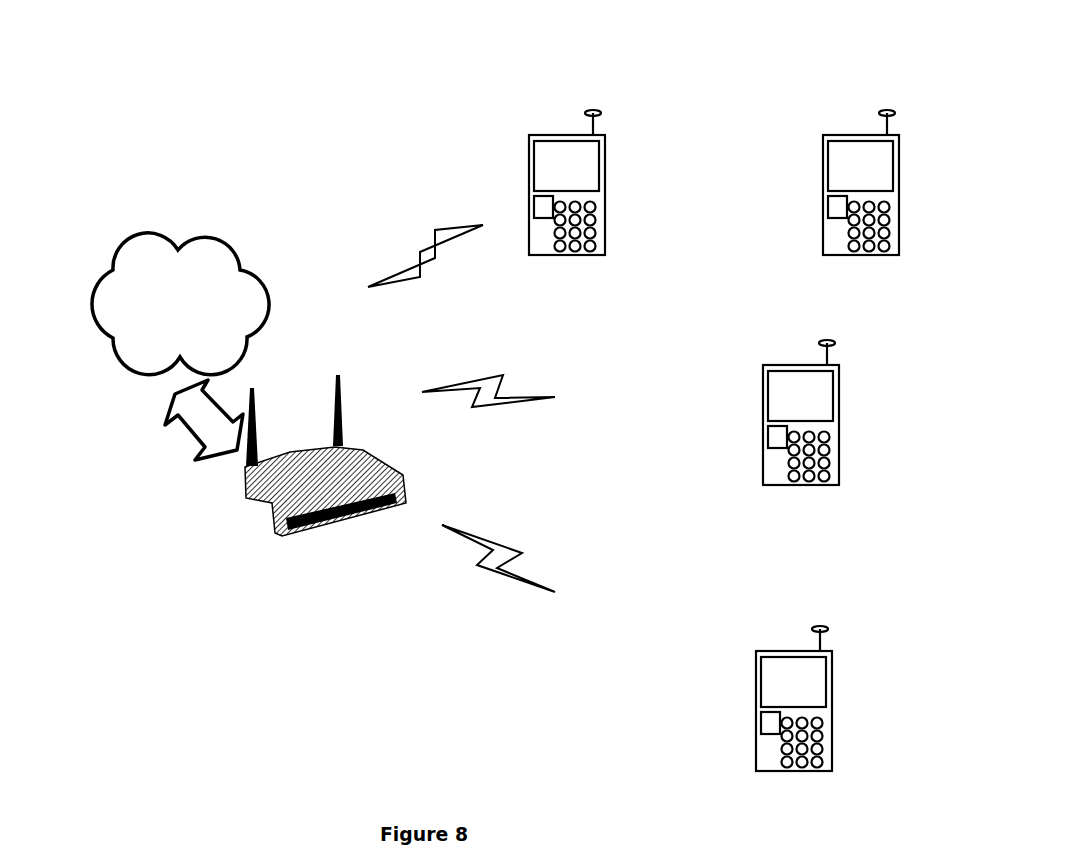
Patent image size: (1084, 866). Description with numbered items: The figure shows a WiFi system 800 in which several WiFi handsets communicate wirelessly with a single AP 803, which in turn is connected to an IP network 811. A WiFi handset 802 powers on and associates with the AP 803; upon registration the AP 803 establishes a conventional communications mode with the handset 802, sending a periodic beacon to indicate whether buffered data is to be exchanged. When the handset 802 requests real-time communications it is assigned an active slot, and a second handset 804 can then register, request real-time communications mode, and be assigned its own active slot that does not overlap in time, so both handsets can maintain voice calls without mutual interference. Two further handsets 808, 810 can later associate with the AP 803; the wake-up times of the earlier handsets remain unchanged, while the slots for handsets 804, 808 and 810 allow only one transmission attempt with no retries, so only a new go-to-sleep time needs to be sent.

The WiFi system 800 is at (345, 151).
The IP network 811 is at (184, 238).
The AP 803 is at (252, 508).
The WiFi handset 802 is at (527, 181).
The handset 808 is at (821, 181).
The handset 810 is at (763, 418).
The handset 804 is at (752, 722).